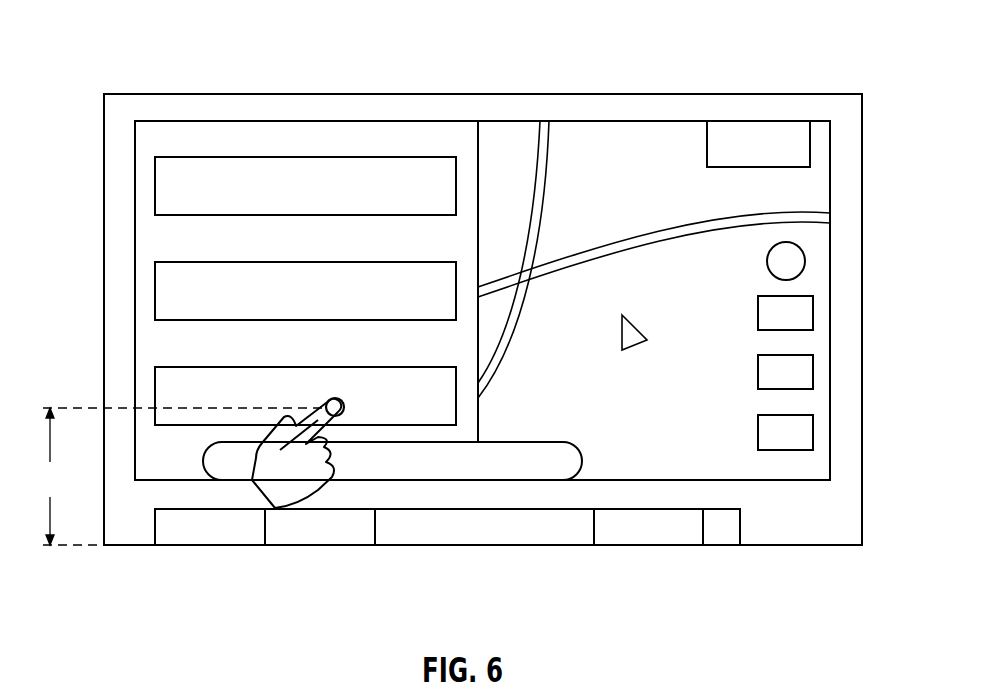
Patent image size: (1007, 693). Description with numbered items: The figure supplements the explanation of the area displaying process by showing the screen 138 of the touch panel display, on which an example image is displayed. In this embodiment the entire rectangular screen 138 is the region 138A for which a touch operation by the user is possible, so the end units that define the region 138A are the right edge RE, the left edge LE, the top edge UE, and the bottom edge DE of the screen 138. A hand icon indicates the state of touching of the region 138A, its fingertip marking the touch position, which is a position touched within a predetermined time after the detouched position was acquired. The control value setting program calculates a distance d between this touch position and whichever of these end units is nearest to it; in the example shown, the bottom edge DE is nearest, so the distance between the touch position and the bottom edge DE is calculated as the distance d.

The screen 138 is at (862, 177).
The region 138A is at (625, 147).
The top edge UE is at (510, 95).
The left edge LE is at (103, 183).
The right edge RE is at (862, 372).
The bottom edge DE is at (482, 547).
The distance d is at (184, 476).